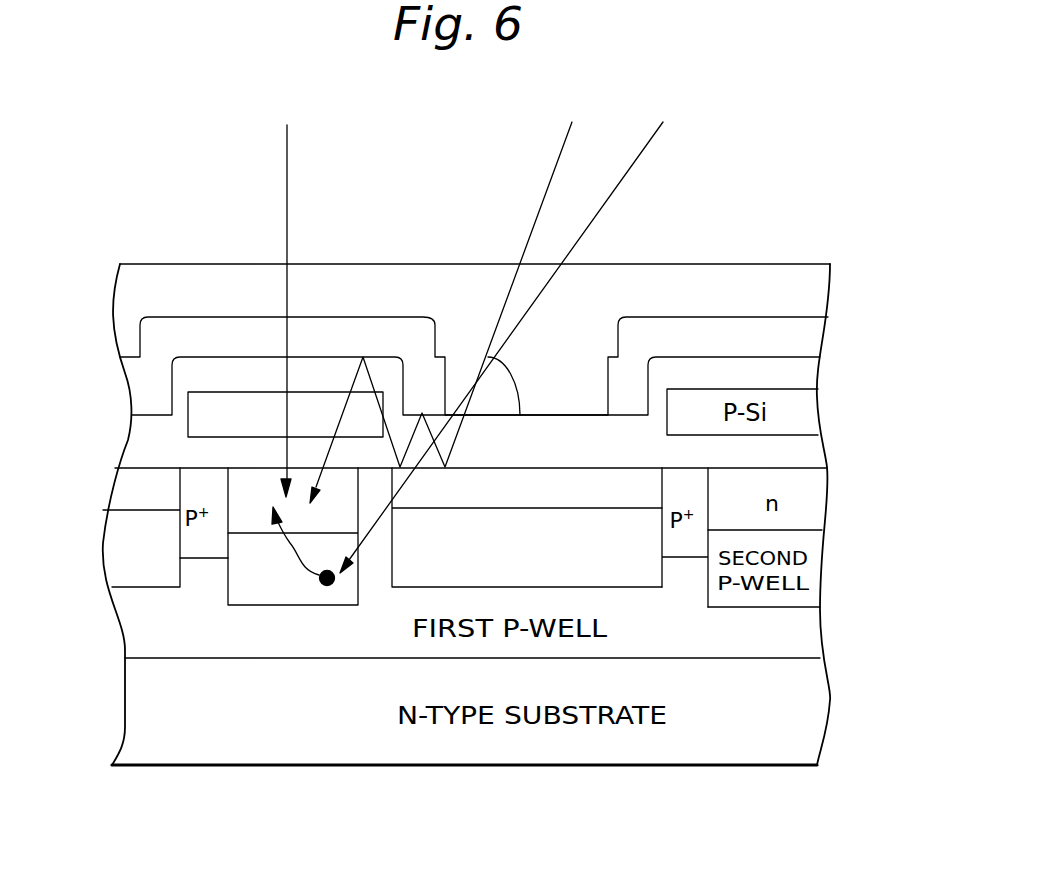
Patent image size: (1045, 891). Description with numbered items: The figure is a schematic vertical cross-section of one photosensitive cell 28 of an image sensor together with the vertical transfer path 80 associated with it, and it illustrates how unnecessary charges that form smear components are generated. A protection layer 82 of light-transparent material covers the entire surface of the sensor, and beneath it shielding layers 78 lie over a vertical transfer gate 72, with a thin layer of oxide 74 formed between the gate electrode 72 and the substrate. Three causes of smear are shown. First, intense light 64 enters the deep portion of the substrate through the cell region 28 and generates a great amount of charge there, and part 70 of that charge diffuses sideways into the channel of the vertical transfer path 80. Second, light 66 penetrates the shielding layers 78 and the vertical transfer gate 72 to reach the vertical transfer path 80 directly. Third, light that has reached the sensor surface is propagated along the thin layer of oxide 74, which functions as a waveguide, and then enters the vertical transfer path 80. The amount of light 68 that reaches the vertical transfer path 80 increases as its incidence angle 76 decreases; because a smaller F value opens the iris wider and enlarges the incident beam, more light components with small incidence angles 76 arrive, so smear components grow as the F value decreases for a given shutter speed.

The photosensitive cell 28 is at (656, 791).
The intense light 64 is at (638, 160).
The light 66 is at (287, 160).
The light 68 is at (552, 177).
The part of charge 70 is at (290, 550).
The vertical transfer gate 72 is at (202, 410).
The thin layer of oxide 74 is at (142, 448).
The incidence angle 76 is at (517, 373).
The shielding layers 78 is at (245, 337).
The vertical transfer path 80 is at (355, 791).
The protection layer 82 is at (805, 295).